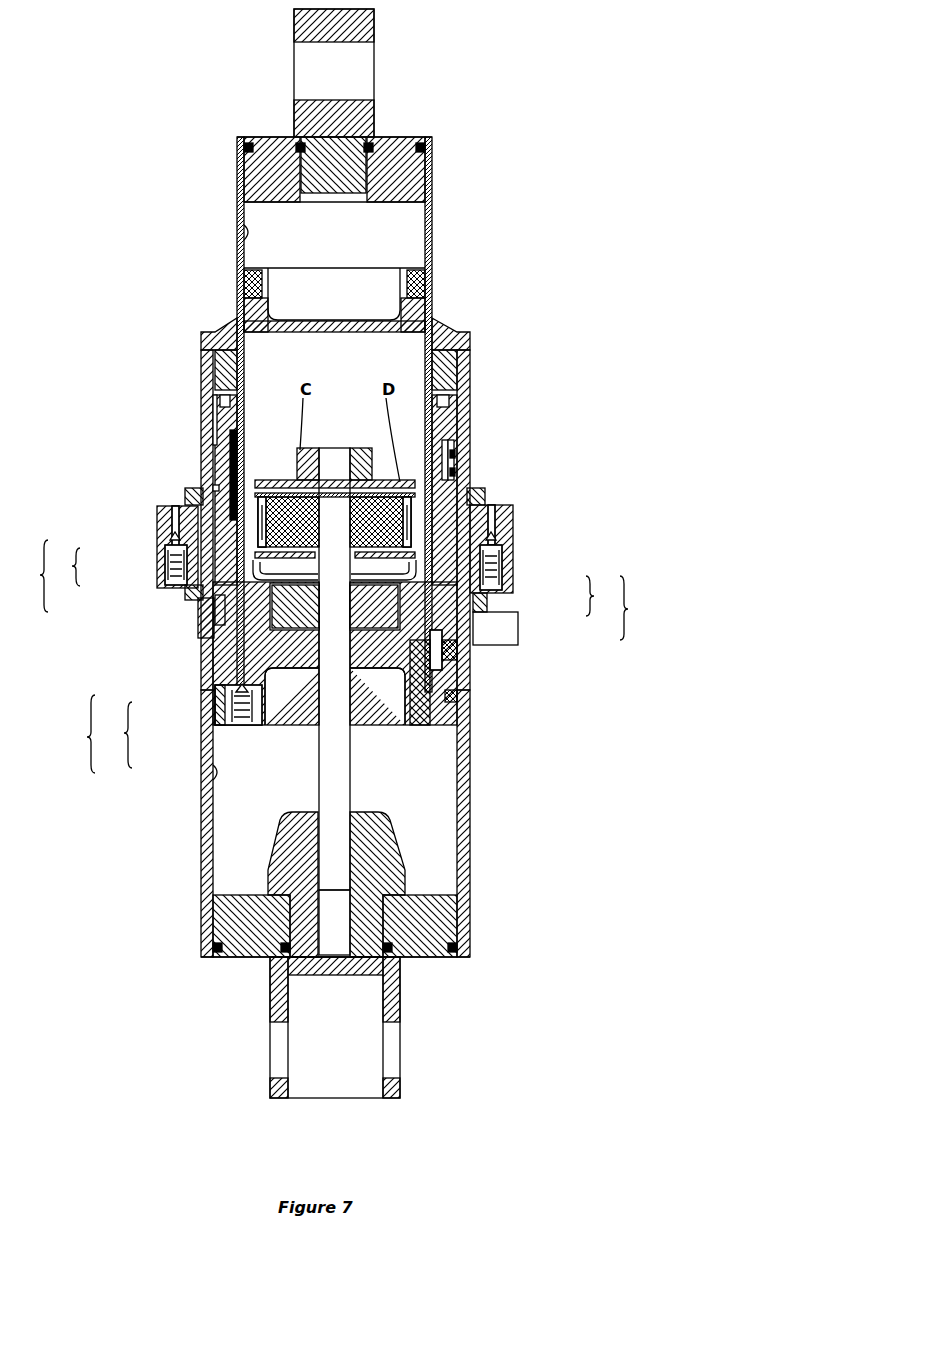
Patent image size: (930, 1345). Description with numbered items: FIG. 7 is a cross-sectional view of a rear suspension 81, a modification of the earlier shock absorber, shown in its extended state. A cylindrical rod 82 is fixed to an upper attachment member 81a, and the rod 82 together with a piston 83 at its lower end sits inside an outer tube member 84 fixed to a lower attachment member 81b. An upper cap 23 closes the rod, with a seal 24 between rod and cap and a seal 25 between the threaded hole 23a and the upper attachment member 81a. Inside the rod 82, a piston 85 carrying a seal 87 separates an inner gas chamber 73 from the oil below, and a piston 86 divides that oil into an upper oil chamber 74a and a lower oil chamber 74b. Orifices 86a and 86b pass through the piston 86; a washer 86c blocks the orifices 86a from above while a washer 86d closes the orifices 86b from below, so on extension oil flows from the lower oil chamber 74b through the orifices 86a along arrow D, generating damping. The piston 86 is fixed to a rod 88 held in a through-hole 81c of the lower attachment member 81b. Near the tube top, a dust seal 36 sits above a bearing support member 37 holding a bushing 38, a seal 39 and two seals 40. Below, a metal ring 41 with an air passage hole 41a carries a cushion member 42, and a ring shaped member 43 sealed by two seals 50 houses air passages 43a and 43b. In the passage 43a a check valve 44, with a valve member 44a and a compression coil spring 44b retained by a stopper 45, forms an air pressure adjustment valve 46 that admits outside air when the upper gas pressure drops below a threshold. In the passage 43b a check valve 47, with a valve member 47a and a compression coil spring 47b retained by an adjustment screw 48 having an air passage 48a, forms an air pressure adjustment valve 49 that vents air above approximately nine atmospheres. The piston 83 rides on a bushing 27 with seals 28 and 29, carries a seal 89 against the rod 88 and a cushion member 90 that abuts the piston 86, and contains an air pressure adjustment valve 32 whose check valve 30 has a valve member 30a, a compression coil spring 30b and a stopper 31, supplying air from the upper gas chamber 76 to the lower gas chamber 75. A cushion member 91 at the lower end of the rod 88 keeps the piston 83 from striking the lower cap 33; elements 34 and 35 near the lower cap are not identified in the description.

The upper attachment member 81a is at (372, 20).
The rear suspension 81 is at (530, 96).
The threaded hole 23a is at (300, 150).
The seal 25 is at (365, 142).
The upper cap 23 is at (395, 142).
The seal 24 is at (432, 150).
The inner gas chamber 73 is at (240, 236).
The rod 82 is at (433, 250).
The seal 87 is at (420, 286).
The piston 85 is at (418, 304).
The dust seal 36 is at (452, 326).
The upper oil chamber 74a is at (225, 372).
The seal 39 is at (462, 386).
The upper gas chamber 76 is at (216, 492).
The bearing support member 37 is at (458, 426).
The bushing 38 is at (455, 446).
The seals 40 is at (452, 454).
The rod 88 is at (345, 797).
The washer 86c is at (292, 490).
The piston 86 is at (420, 484).
The orifices 86a is at (440, 498).
The orifices 86b is at (258, 512).
The washer 86d is at (266, 568).
The air passage hole 41a is at (190, 496).
The air passage 43a is at (172, 527).
The valve member 44a is at (172, 552).
The compression coil spring 44b is at (172, 572).
The check valve 44 is at (68, 567).
The air pressure adjustment valve 46 is at (33, 576).
The stopper 45 is at (178, 592).
The lower oil chamber 74b is at (205, 600).
The seals 50 is at (205, 490).
The metal ring 41 is at (472, 496).
The ring shaped member 43 is at (497, 531).
The air passage 43b is at (500, 532).
The valve member 47a is at (497, 558).
The compression coil spring 47b is at (497, 586).
The check valve 47 is at (603, 596).
The air pressure adjustment valve 49 is at (637, 608).
The adjustment screw 48 is at (518, 630).
The air passage 48a is at (480, 642).
The cushion member 42 is at (462, 636).
The seal 89 is at (300, 615).
The cushion member 90 is at (378, 615).
The seal 29 is at (460, 672).
The bushing 27 is at (452, 702).
The seal 28 is at (460, 727).
The piston 83 is at (430, 727).
The valve member 30a is at (236, 702).
The compression coil spring 30b is at (236, 718).
The stopper 31 is at (232, 724).
The check valve 30 is at (116, 735).
The air pressure adjustment valve 32 is at (79, 734).
The lower gas chamber 75 is at (213, 772).
The outer tube member 84 is at (470, 862).
The cushion member 91 is at (291, 820).
The lower cap 33 is at (420, 946).
The seal 34 is at (462, 947).
The seal 35 is at (287, 972).
The through-hole 81c is at (352, 916).
The lower attachment member 81b is at (400, 1002).